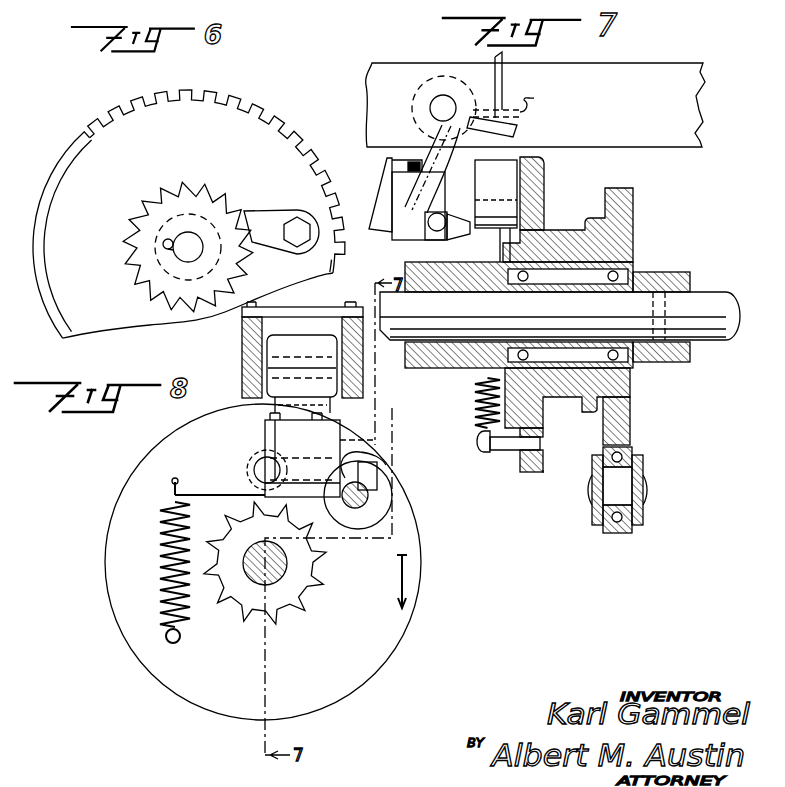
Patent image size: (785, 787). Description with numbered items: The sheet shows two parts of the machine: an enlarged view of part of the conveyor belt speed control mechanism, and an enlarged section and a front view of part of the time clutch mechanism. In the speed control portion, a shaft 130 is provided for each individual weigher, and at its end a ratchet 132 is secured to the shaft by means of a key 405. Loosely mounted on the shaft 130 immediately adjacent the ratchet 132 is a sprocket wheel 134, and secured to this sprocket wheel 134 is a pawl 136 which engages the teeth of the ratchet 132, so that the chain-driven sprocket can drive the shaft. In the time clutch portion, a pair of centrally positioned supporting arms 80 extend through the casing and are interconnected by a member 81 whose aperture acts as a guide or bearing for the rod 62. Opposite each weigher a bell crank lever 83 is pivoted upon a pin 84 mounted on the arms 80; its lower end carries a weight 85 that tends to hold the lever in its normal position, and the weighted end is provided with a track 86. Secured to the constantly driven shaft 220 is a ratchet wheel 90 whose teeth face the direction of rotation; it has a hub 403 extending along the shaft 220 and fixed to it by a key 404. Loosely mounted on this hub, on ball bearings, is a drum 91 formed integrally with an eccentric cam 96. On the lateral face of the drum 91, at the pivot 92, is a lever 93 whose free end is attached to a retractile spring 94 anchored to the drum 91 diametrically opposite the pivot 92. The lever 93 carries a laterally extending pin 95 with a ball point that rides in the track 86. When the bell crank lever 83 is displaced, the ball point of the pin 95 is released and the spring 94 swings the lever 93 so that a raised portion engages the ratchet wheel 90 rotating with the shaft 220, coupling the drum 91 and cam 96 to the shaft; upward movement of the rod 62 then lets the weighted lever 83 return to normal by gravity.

In FIG. 7, the rod 62 is at (505, 73).
In FIG. 7, the supporting arms 80 is at (640, 147).
In FIG. 8, the supporting arms 80 is at (243, 341).
In FIG. 8, the member 81 is at (336, 308).
In FIG. 7, the bell crank lever 83 is at (482, 151).
In FIG. 8, the bell crank lever 83 is at (284, 340).
In FIG. 7, the pin 84 is at (433, 100).
In FIG. 8, the pin 84 is at (345, 390).
In FIG. 7, the weight 85 is at (398, 236).
In FIG. 8, the weight 85 is at (340, 440).
In FIG. 8, the track 86 is at (350, 456).
In FIG. 8, the ratchet wheel 90 is at (278, 622).
In FIG. 7, the drum 91 is at (543, 472).
In FIG. 8, the drum 91 is at (421, 546).
In FIG. 7, the pivot 92 is at (532, 198).
In FIG. 8, the pivot 92 is at (368, 500).
In FIG. 7, the lever 93 is at (492, 168).
In FIG. 8, the lever 93 is at (192, 484).
In FIG. 7, the retractile spring 94 is at (478, 404).
In FIG. 8, the retractile spring 94 is at (162, 574).
In FIG. 7, the pin 95 is at (470, 218).
In FIG. 8, the pin 95 is at (254, 468).
In FIG. 7, the eccentric cam 96 is at (630, 430).
In FIG. 6, the shaft 130 is at (182, 254).
In FIG. 6, the ratchet 132 is at (190, 158).
In FIG. 6, the sprocket wheel 134 is at (293, 90).
In FIG. 6, the pawl 136 is at (289, 211).
In FIG. 7, the constantly driven shaft 220 is at (706, 300).
In FIG. 8, the constantly driven shaft 220 is at (286, 572).
In FIG. 7, the hub 403 is at (456, 366).
In FIG. 7, the key 404 is at (458, 238).
In FIG. 6, the key 405 is at (163, 244).